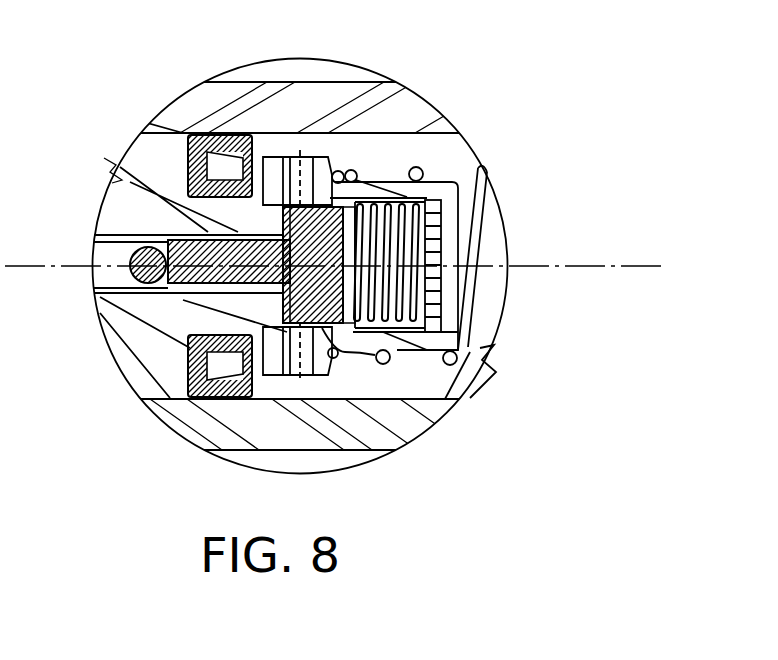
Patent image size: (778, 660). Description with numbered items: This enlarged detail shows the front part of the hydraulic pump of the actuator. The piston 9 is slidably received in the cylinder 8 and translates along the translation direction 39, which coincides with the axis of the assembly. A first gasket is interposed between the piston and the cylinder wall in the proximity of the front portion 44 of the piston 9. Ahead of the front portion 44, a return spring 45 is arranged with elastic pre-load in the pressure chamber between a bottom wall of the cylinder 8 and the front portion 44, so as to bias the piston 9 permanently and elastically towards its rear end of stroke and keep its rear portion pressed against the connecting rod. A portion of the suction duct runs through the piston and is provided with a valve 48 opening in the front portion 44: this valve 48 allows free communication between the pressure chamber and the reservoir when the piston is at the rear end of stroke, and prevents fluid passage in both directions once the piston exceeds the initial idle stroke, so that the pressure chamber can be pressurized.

The cylinder 8 is at (320, 103).
The piston 9 is at (157, 160).
The front portion 44 is at (226, 212).
The valve 48 is at (350, 237).
The return spring 45 is at (477, 228).
The translation direction 39 is at (570, 266).